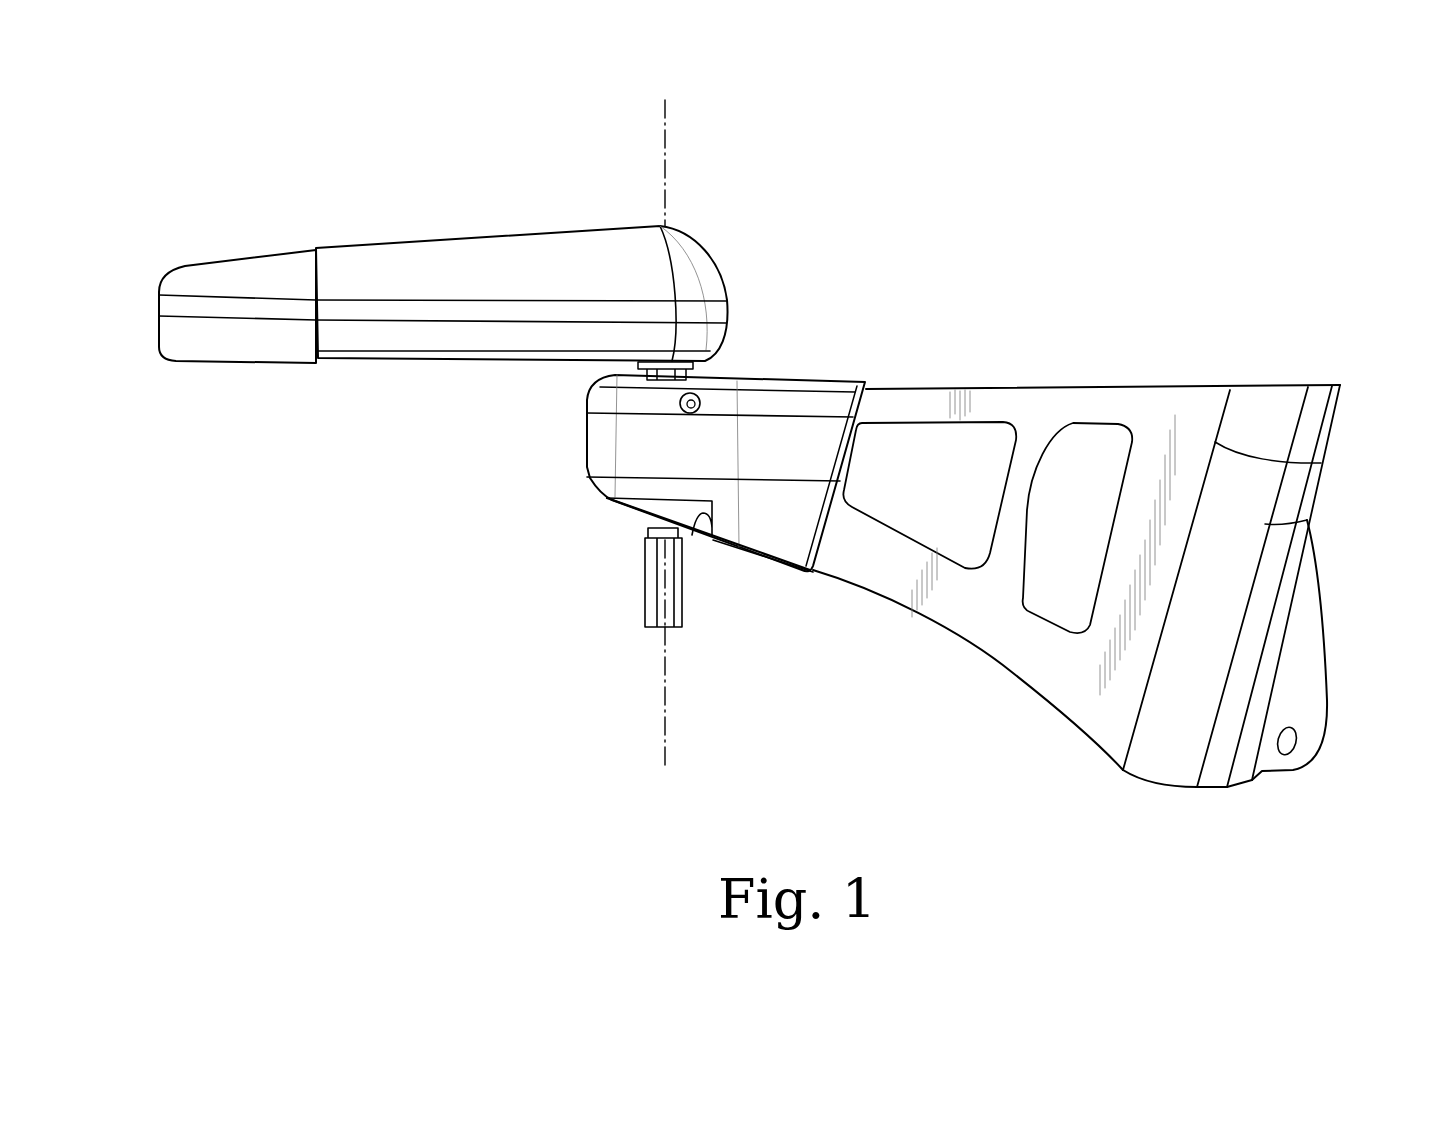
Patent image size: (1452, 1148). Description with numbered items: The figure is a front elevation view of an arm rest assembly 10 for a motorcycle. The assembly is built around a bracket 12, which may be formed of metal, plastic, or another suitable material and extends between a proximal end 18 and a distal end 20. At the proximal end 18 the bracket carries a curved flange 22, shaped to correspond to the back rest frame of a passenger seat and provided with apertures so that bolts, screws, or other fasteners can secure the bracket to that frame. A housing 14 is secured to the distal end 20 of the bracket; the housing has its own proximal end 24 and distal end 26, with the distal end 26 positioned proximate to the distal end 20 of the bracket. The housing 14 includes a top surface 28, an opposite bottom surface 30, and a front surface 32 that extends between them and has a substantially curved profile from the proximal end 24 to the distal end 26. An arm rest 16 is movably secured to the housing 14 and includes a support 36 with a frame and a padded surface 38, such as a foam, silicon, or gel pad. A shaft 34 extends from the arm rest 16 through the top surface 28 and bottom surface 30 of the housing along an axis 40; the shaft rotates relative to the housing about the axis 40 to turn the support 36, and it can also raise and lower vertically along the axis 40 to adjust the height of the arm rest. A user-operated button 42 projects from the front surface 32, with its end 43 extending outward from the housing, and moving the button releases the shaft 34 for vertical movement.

The arm rest assembly 10 is at (780, 427).
The bracket 12 is at (1043, 398).
The housing 14 is at (782, 402).
The arm rest 16 is at (265, 270).
The proximal end 18 is at (1339, 372).
The distal end 20 is at (607, 520).
The curved flange 22 is at (1297, 520).
The proximal end 24 is at (867, 380).
The distal end 26 is at (602, 430).
The top surface 28 is at (732, 377).
The bottom surface 30 is at (740, 547).
The front surface 32 is at (643, 460).
The shaft 34 is at (652, 610).
The support 36 is at (413, 363).
The padded surface 38 is at (455, 252).
The axis 40 is at (667, 143).
The user-operated button 42 is at (690, 413).
The end 43 is at (680, 401).